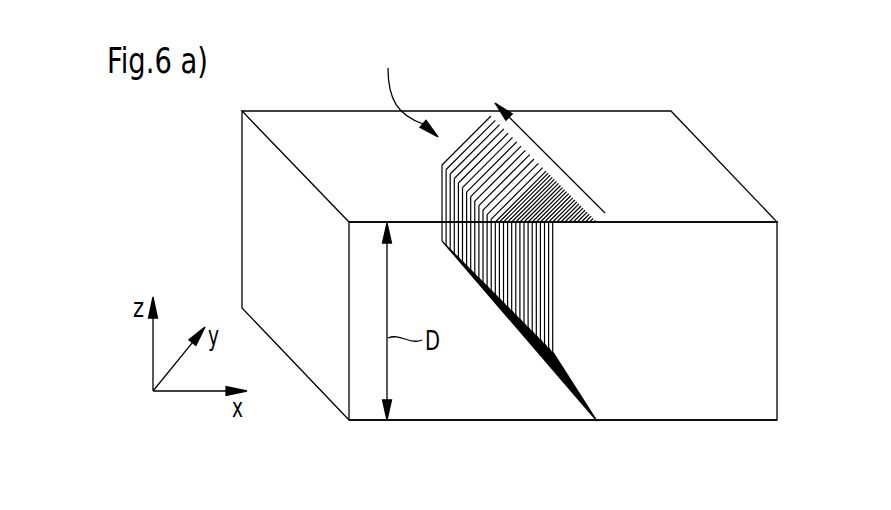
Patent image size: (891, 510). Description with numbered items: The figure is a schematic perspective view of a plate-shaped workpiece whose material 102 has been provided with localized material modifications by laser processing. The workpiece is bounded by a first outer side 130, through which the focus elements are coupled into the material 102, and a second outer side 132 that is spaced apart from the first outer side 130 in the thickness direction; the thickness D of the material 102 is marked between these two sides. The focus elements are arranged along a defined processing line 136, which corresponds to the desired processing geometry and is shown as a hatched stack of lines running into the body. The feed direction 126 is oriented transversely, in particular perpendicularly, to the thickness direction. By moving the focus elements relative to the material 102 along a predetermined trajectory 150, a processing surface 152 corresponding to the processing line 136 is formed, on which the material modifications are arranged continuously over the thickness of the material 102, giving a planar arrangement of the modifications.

The material 102 is at (763, 325).
The feed direction 126 is at (525, 120).
The first outer side 130 is at (638, 122).
The second outer side 132 is at (634, 421).
The processing line 136 is at (570, 250).
The trajectory 150 is at (557, 160).
The processing surface 152 is at (405, 90).